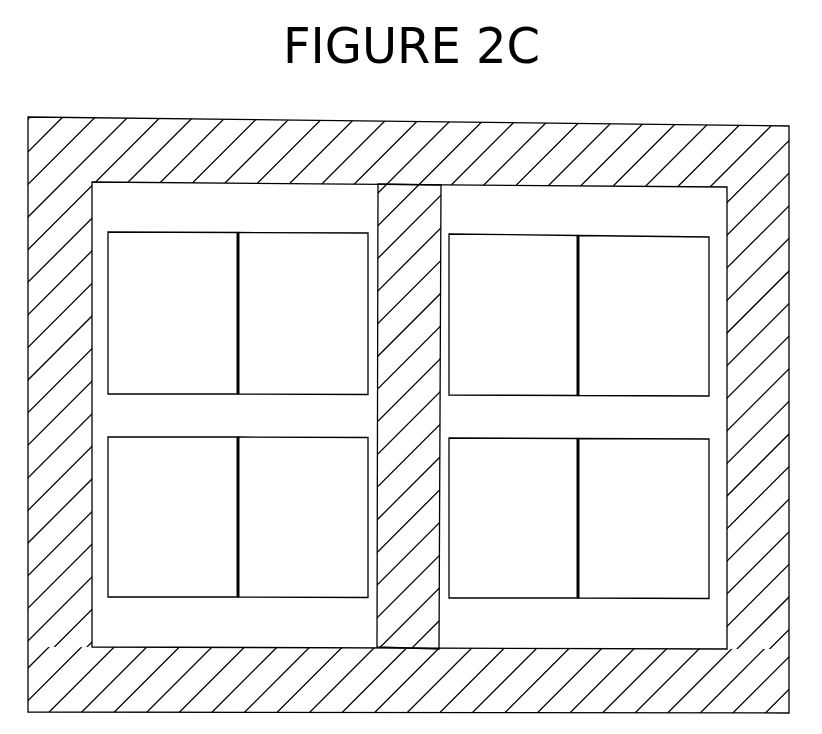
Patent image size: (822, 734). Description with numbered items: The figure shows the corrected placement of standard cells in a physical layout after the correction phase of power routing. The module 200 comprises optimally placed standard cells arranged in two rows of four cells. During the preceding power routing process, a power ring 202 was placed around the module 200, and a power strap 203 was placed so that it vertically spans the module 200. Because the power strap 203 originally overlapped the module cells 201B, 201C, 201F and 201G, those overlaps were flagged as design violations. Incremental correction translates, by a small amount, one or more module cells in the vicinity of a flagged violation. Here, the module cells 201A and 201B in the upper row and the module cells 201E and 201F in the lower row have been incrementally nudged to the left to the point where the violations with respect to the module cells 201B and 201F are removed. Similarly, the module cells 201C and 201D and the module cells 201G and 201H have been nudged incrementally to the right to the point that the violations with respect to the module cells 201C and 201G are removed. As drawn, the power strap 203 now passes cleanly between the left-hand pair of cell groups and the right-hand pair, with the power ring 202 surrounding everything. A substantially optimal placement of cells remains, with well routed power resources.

The module 200 is at (411, 410).
The power ring 202 is at (695, 167).
The power strap 203 is at (426, 267).
The module cell 201A is at (173, 313).
The module cell 201B is at (303, 314).
The module cell 201C is at (513, 315).
The module cell 201D is at (643, 316).
The module cell 201E is at (173, 517).
The module cell 201F is at (303, 517).
The module cell 201G is at (513, 518).
The module cell 201H is at (643, 519).